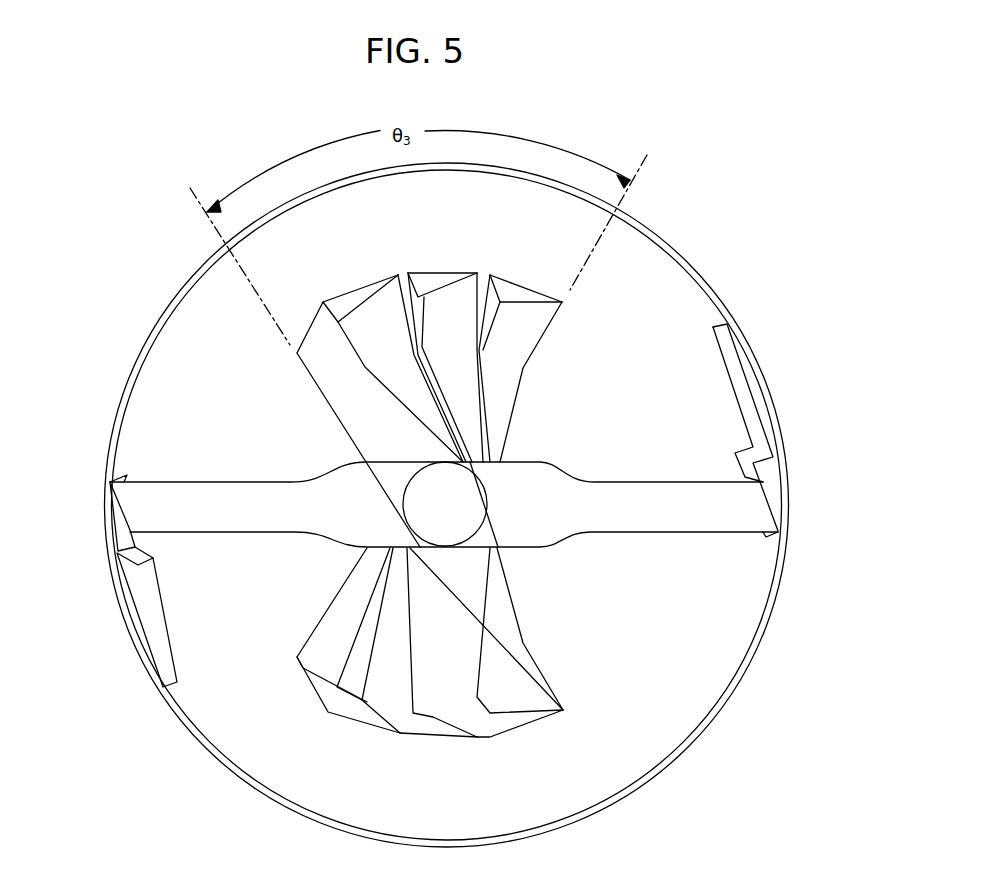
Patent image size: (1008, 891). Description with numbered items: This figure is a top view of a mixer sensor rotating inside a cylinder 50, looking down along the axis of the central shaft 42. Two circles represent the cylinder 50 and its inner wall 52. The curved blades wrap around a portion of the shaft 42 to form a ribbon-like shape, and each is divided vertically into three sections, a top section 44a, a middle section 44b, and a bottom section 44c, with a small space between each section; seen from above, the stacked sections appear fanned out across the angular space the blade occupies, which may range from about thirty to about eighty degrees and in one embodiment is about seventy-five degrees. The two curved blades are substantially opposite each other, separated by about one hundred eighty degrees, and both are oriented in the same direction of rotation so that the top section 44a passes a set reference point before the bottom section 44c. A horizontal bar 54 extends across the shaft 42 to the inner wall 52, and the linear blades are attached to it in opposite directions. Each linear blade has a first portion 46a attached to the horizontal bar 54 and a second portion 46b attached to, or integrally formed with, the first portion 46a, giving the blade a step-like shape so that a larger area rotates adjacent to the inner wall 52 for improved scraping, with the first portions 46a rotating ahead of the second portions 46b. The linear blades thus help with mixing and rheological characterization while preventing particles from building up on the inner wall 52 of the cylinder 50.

The shaft 42 is at (450, 507).
The top section of curved blade 44a is at (352, 300).
The middle section of curved blade 44b is at (435, 277).
The bottom section of curved blade 44c is at (517, 288).
The first portion of linear blade 46a is at (101, 565).
The second portion of linear blade 46b is at (145, 700).
The cylinder 50 is at (673, 763).
The inner wall 52 is at (343, 824).
The horizontal bar 54 is at (665, 505).